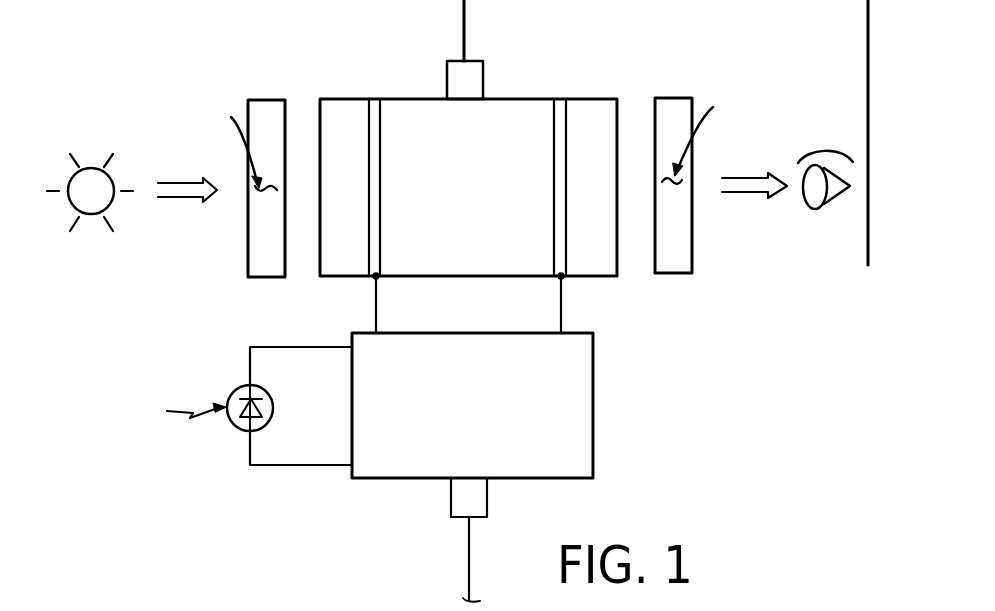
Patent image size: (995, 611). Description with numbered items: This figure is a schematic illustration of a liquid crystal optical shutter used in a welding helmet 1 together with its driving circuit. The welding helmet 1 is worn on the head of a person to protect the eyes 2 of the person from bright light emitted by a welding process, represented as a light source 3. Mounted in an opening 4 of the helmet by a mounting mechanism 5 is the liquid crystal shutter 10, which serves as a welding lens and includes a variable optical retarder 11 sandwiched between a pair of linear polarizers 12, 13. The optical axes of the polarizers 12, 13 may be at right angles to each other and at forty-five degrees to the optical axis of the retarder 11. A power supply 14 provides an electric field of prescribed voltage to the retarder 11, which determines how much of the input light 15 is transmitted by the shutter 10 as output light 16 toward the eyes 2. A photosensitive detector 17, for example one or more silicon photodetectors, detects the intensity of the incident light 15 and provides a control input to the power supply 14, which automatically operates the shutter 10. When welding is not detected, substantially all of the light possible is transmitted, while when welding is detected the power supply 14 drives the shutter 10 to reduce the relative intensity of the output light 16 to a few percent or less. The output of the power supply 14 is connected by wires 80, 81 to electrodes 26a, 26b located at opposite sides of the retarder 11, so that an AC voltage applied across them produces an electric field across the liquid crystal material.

The welding helmet 1 is at (352, 559).
The eyes 2 is at (832, 203).
The light source 3 is at (91, 214).
The opening 4 is at (373, 488).
The mounting mechanism 5 is at (452, 517).
The liquid crystal shutter 10 is at (650, 296).
The variable optical retarder 11 is at (480, 122).
The linear polarizer 12 is at (267, 99).
The linear polarizer 13 is at (673, 98).
The power supply 14 is at (593, 403).
The input light 15 is at (184, 182).
The output light 16 is at (752, 178).
The photosensitive detector 17 is at (233, 392).
The electrode 26a is at (369, 99).
The electrode 26b is at (562, 99).
The first wire 80 is at (376, 312).
The second wire 81 is at (561, 312).